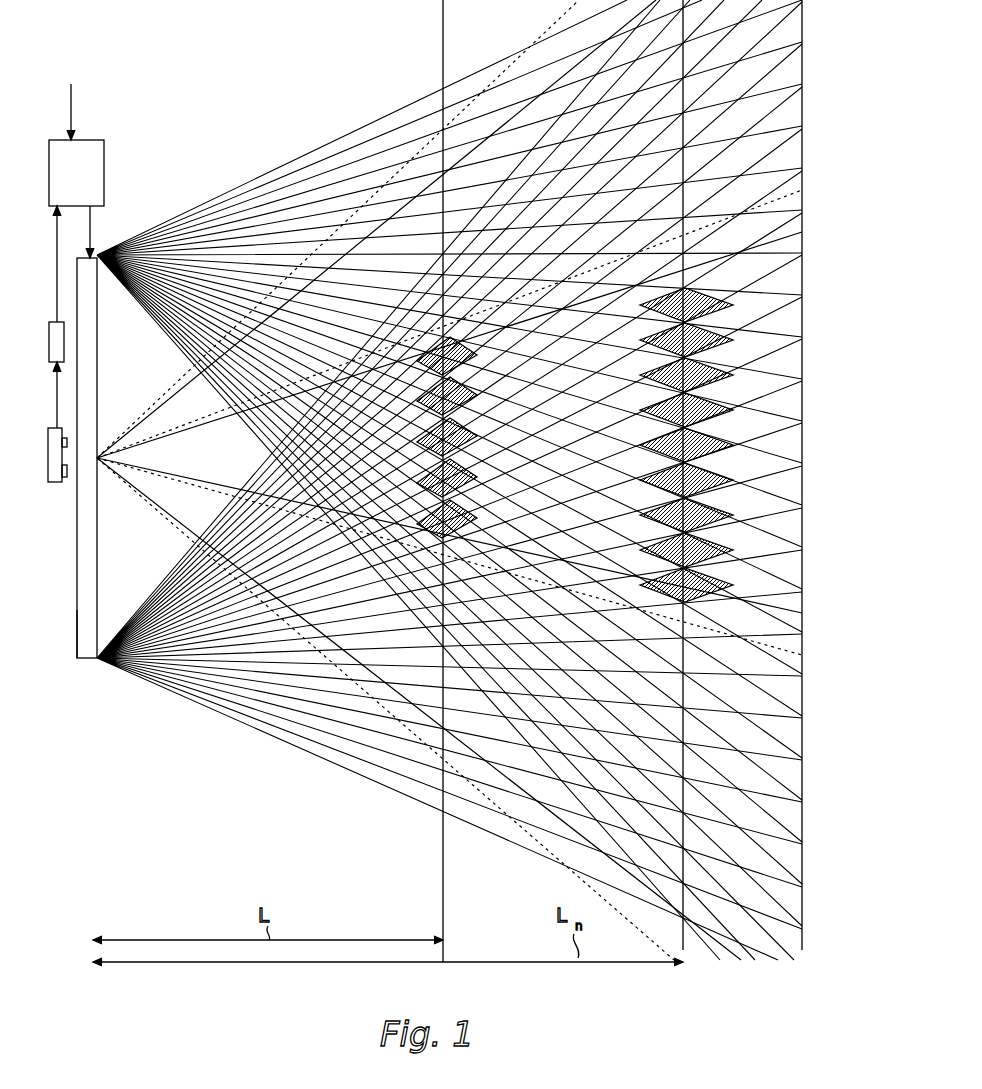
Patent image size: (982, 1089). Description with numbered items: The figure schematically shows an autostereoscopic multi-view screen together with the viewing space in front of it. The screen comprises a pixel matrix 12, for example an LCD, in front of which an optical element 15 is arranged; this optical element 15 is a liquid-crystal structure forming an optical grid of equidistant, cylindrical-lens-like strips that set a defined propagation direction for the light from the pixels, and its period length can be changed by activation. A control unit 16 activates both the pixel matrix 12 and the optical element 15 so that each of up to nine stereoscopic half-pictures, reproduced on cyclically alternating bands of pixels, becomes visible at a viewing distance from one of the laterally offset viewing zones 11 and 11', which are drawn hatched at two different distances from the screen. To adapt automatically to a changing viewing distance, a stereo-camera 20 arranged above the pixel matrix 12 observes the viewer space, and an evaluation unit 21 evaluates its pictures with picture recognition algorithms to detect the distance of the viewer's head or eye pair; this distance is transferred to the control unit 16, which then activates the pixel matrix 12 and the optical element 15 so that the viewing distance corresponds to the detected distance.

The viewing zone 11 is at (712, 445).
The viewing zone 11' is at (454, 452).
The pixel matrix 12 is at (77, 610).
The optical element 15 is at (97, 540).
The control unit 16 is at (104, 170).
The stereo-camera 20 is at (56, 482).
The evaluation unit 21 is at (53, 322).